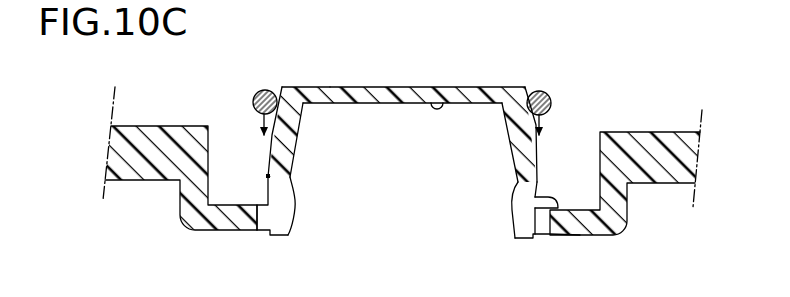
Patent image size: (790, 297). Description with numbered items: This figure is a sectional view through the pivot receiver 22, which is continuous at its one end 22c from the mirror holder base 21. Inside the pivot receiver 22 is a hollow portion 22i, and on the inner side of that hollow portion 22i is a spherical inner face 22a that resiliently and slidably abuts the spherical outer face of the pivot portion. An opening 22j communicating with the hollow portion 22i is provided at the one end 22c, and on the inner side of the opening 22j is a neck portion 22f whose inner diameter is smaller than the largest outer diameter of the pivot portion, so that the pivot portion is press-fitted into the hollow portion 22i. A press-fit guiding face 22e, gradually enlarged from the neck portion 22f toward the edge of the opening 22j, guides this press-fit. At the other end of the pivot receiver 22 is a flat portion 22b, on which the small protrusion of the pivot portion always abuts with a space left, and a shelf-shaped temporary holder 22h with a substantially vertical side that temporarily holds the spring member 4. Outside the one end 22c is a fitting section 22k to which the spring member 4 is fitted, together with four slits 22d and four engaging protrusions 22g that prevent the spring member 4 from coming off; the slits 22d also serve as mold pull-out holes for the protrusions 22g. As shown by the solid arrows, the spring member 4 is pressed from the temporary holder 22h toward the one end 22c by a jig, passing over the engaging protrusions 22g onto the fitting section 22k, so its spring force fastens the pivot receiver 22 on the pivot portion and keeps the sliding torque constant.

The spring member 4 is at (539, 87).
The mirror holder base 21 is at (151, 126).
The pivot receiver 22 is at (409, 161).
The spherical inner face 22a is at (293, 127).
The flat portion 22b is at (447, 87).
The one end 22c is at (267, 203).
The slit 22d is at (277, 235).
The press-fit guiding face 22e is at (290, 233).
The neck portion 22f is at (516, 205).
The engaging protrusion 22g is at (540, 180).
The temporary holder 22h is at (308, 85).
The hollow portion 22i is at (378, 118).
The opening 22j is at (483, 223).
The fitting section 22k is at (565, 236).